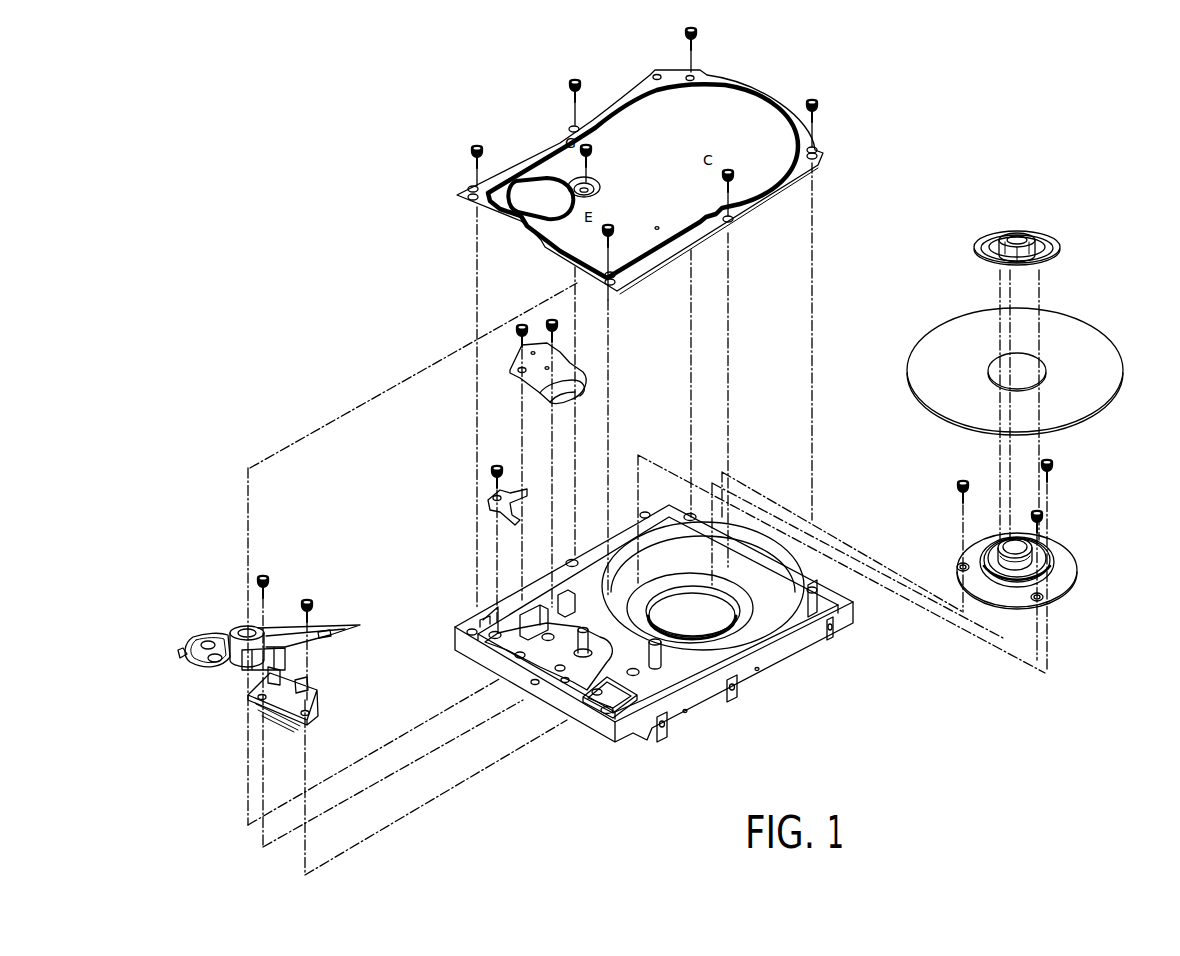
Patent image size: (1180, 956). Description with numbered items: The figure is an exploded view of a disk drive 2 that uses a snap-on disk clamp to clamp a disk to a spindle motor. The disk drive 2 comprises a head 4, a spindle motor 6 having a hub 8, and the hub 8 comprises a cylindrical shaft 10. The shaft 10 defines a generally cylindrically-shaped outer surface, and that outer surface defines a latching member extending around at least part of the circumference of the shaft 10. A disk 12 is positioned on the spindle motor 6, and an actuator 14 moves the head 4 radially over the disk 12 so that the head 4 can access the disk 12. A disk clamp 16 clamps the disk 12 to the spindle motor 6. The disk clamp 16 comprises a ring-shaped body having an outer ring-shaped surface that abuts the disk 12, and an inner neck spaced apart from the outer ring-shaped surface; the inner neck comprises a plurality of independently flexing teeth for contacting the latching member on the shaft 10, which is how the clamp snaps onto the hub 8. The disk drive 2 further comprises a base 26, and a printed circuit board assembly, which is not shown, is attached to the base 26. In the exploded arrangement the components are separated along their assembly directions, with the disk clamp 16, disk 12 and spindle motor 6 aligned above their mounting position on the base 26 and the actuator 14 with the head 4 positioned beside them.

The disk drive 2 is at (280, 172).
The head 4 is at (353, 628).
The spindle motor 6 is at (1075, 528).
The hub 8 is at (1053, 568).
The cylindrical shaft 10 is at (1030, 548).
The disk 12 is at (1124, 368).
The actuator 14 is at (285, 637).
The disk clamp 16 is at (1062, 243).
The base 26 is at (770, 670).